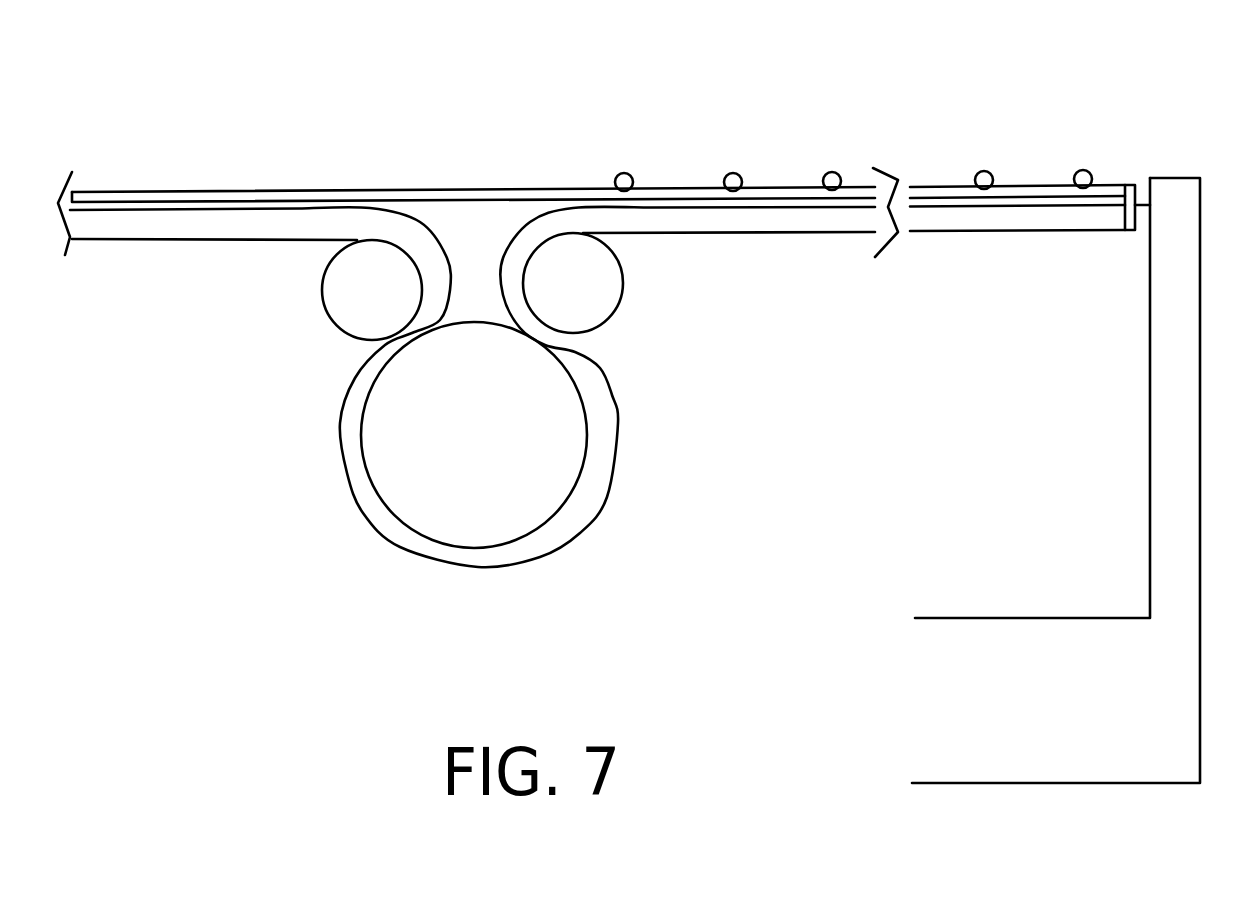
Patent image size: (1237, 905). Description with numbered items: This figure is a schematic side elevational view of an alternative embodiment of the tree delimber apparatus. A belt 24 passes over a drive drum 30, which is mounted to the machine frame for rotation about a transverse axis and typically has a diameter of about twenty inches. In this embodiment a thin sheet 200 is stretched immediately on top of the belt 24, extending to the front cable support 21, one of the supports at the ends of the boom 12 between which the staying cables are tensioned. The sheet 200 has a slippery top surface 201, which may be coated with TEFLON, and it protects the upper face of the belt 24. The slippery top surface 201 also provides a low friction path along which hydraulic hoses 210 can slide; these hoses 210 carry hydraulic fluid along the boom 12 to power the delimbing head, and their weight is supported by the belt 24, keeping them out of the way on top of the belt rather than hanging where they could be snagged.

The thin sheet 200 is at (550, 193).
The slippery top surface 201 is at (655, 183).
The hydraulic hoses 210 is at (835, 172).
The belt 24 is at (792, 218).
The drive drum 30 is at (535, 465).
The front cable support 21 is at (1167, 431).
The boom 12 is at (1079, 682).